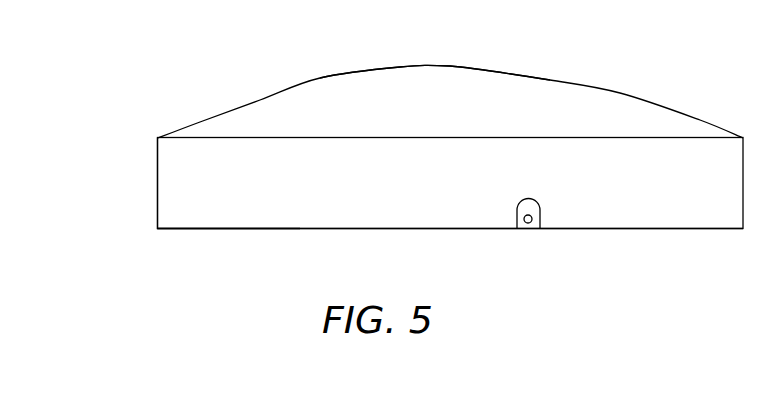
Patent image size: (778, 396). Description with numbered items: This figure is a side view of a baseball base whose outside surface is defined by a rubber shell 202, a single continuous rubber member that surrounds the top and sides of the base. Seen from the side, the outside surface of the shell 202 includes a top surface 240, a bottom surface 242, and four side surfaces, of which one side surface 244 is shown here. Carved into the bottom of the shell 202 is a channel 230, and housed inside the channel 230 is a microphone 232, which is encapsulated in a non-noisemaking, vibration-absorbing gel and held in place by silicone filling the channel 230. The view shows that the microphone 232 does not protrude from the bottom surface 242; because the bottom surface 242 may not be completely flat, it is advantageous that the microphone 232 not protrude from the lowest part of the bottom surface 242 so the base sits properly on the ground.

The rubber shell 202 is at (597, 115).
The top surface 240 is at (377, 108).
The side surface 244 is at (210, 198).
The bottom surface 242 is at (252, 228).
The channel 230 is at (518, 212).
The microphone 232 is at (535, 227).